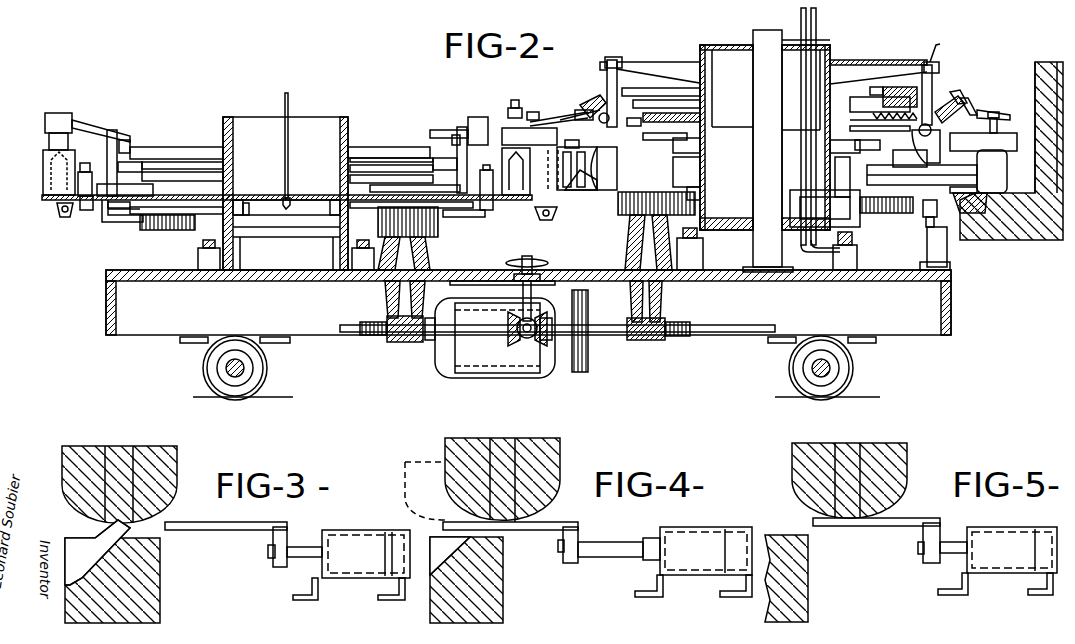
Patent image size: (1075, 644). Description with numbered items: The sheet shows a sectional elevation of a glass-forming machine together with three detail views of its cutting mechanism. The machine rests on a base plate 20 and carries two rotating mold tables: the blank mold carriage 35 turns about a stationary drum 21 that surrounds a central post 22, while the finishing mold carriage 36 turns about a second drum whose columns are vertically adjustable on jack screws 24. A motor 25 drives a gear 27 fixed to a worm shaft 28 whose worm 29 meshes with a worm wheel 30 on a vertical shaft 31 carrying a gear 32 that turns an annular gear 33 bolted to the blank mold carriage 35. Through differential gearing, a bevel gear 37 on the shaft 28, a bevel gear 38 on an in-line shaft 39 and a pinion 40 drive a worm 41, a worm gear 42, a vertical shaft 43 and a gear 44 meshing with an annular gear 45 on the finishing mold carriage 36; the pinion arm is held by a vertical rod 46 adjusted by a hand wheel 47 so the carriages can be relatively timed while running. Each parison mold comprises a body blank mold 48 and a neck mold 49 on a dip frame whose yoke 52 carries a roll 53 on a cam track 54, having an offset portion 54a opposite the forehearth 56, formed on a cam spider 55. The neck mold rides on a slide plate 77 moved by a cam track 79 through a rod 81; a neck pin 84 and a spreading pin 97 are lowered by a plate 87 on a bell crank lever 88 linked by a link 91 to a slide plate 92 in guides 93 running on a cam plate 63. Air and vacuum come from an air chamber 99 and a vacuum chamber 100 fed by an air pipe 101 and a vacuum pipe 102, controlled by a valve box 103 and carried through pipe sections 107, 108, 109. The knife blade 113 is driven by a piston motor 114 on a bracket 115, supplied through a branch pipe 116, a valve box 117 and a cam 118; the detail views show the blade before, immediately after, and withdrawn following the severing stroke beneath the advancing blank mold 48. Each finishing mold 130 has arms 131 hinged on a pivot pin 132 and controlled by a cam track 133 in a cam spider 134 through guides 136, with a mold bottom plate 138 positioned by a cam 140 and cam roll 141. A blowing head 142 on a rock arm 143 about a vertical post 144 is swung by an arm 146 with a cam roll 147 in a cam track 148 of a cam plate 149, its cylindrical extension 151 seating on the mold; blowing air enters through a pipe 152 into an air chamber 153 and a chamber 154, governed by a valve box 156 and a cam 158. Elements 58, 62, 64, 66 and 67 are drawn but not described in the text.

In FIG. 2, the base plate 20 is at (106, 296).
In FIG. 2, the stationary drum 21 is at (832, 50).
In FIG. 2, the central post 22 is at (753, 90).
In FIG. 2, the jack screws 24 is at (198, 258).
In FIG. 2, the motor 25 is at (548, 372).
In FIG. 2, the gear 27 is at (588, 360).
In FIG. 2, the worm shaft 28 is at (349, 125).
In FIG. 2, the worm 29 is at (660, 341).
In FIG. 2, the worm wheel 30 is at (690, 328).
In FIG. 2, the vertical shaft 31 is at (660, 303).
In FIG. 2, the gear 32 is at (618, 210).
In FIG. 2, the annular gear 33 is at (900, 214).
In FIG. 2, the blank mold carriage 35 is at (910, 158).
In FIG. 2, the finishing mold carriage 36 is at (125, 224).
In FIG. 2, the bevel gear 37 is at (540, 348).
In FIG. 2, the bevel gear 38 is at (510, 342).
In FIG. 2, the shaft 39 is at (488, 323).
In FIG. 2, the pinion 40 is at (527, 338).
In FIG. 2, the worm 41 is at (400, 342).
In FIG. 2, the worm gear 42 is at (368, 336).
In FIG. 2, the vertical shaft 43 is at (388, 300).
In FIG. 2, the gear 44 is at (425, 238).
In FIG. 2, the annular gear 45 is at (172, 230).
In FIG. 2, the vertical rod 46 is at (531, 296).
In FIG. 2, the hand wheel 47 is at (550, 262).
In FIG. 2, the body blank mold 48 is at (562, 192).
In FIG. 3, the body blank mold 48 is at (160, 491).
In FIG. 4, the body blank mold 48 is at (550, 490).
In FIG. 5, the body blank mold 48 is at (893, 488).
In FIG. 2, the neck mold 49 is at (504, 128).
In FIG. 2, the yoke 52 is at (617, 76).
In FIG. 2, the roll 53 is at (615, 57).
In FIG. 2, the cam track 54 is at (605, 60).
In FIG. 2, the offset portion 54a is at (948, 48).
In FIG. 2, the cam spider 55 is at (685, 62).
In FIG. 2, the forehearth 56 is at (1045, 242).
In FIG. 3, the forehearth 56 is at (160, 593).
In FIG. 4, the forehearth 56 is at (503, 588).
In FIG. 5, the forehearth 56 is at (808, 560).
In FIG. 2, the housing 58 is at (752, 157).
In FIG. 2, the bar 62 is at (879, 97).
In FIG. 2, the cam plate 63 is at (666, 90).
In FIG. 2, the rack 64 is at (671, 120).
In FIG. 2, the rack 66 is at (883, 119).
In FIG. 2, the bar 67 is at (880, 129).
In FIG. 2, the slide plate 77 is at (545, 170).
In FIG. 2, the cam track 79 is at (636, 121).
In FIG. 2, the rod 81 is at (575, 142).
In FIG. 2, the neck pin 84 is at (516, 100).
In FIG. 2, the plate 87 is at (580, 110).
In FIG. 2, the bell crank lever 88 is at (562, 118).
In FIG. 2, the link 91 is at (772, 100).
In FIG. 2, the slide plate 92 is at (769, 89).
In FIG. 2, the guides 93 is at (877, 83).
In FIG. 2, the pin 97 is at (532, 103).
In FIG. 2, the air chamber 99 is at (700, 190).
In FIG. 2, the vacuum chamber 100 is at (700, 173).
In FIG. 2, the air pipe 101 is at (855, 144).
In FIG. 2, the vacuum pipe 102 is at (817, 24).
In FIG. 2, the valve box 103 is at (700, 144).
In FIG. 2, the pipe section 107 is at (665, 135).
In FIG. 2, the pipe section 108 is at (947, 93).
In FIG. 2, the pipe section 109 is at (565, 118).
In FIG. 2, the knife blade 113 is at (1005, 203).
In FIG. 3, the knife blade 113 is at (178, 526).
In FIG. 4, the knife blade 113 is at (510, 530).
In FIG. 5, the knife blade 113 is at (833, 522).
In FIG. 2, the piston motor 114 is at (975, 212).
In FIG. 3, the piston motor 114 is at (362, 530).
In FIG. 4, the piston motor 114 is at (717, 527).
In FIG. 5, the piston motor 114 is at (1010, 527).
In FIG. 2, the bracket 115 is at (948, 265).
In FIG. 2, the branch pipe 116 is at (947, 245).
In FIG. 2, the valve box 117 is at (926, 218).
In FIG. 2, the cam 118 is at (945, 186).
In FIG. 2, the finishing mold 130 is at (43, 172).
In FIG. 2, the arms 131 is at (78, 176).
In FIG. 2, the pivot pin 132 is at (85, 163).
In FIG. 2, the cam track 133 is at (301, 185).
In FIG. 2, the cam spider 134 is at (200, 172).
In FIG. 2, the guides 136 is at (153, 190).
In FIG. 2, the mold bottom plate 138 is at (42, 195).
In FIG. 2, the cam 140 is at (105, 220).
In FIG. 2, the cam roll 141 is at (57, 212).
In FIG. 2, the blowing head 142 is at (45, 122).
In FIG. 2, the rock arm 143 is at (106, 126).
In FIG. 2, the vertical post 144 is at (95, 160).
In FIG. 2, the arm 146 is at (117, 140).
In FIG. 2, the cam roll 147 is at (130, 145).
In FIG. 2, the cam track 148 is at (420, 158).
In FIG. 2, the cam plate 149 is at (180, 147).
In FIG. 2, the cylindrical extension 151 is at (49, 142).
In FIG. 2, the pipe 152 is at (289, 100).
In FIG. 2, the air chamber 153 is at (246, 203).
In FIG. 2, the chamber 154 is at (110, 224).
In FIG. 2, the valve box 156 is at (290, 155).
In FIG. 2, the cam 158 is at (287, 164).